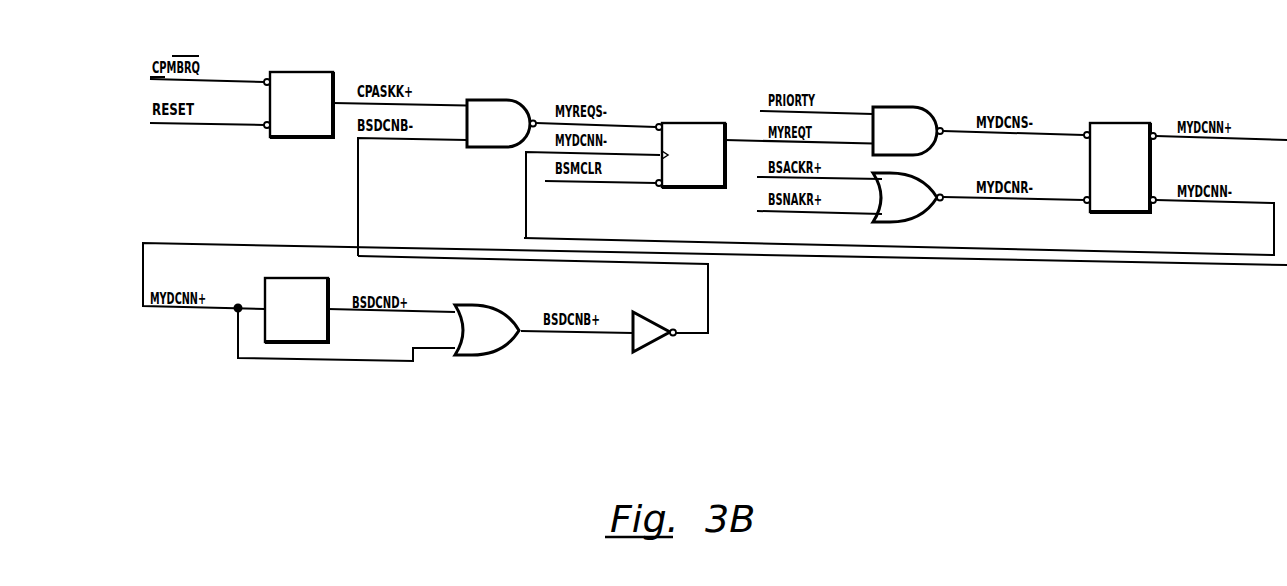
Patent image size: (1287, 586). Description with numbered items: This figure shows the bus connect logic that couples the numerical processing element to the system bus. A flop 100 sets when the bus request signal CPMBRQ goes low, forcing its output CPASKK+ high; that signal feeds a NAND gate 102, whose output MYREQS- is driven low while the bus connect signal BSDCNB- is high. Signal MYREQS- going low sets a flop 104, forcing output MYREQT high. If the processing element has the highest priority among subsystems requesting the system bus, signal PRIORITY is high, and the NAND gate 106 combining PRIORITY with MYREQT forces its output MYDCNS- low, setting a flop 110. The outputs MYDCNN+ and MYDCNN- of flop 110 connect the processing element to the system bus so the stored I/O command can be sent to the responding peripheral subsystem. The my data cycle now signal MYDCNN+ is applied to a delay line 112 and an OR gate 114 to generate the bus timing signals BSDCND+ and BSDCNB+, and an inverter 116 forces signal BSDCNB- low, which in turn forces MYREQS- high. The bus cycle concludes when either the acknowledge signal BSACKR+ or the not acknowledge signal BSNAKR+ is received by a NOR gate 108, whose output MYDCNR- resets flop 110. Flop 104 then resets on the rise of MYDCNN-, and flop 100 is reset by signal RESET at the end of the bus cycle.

The flop 100 is at (308, 72).
The NAND gate 102 is at (494, 100).
The flop 104 is at (690, 123).
The NAND gate 106 is at (905, 107).
The NOR gate 108 is at (918, 173).
The flop 110 is at (1120, 123).
The delay line 112 is at (303, 278).
The OR gate 114 is at (485, 305).
The inverter 116 is at (648, 312).